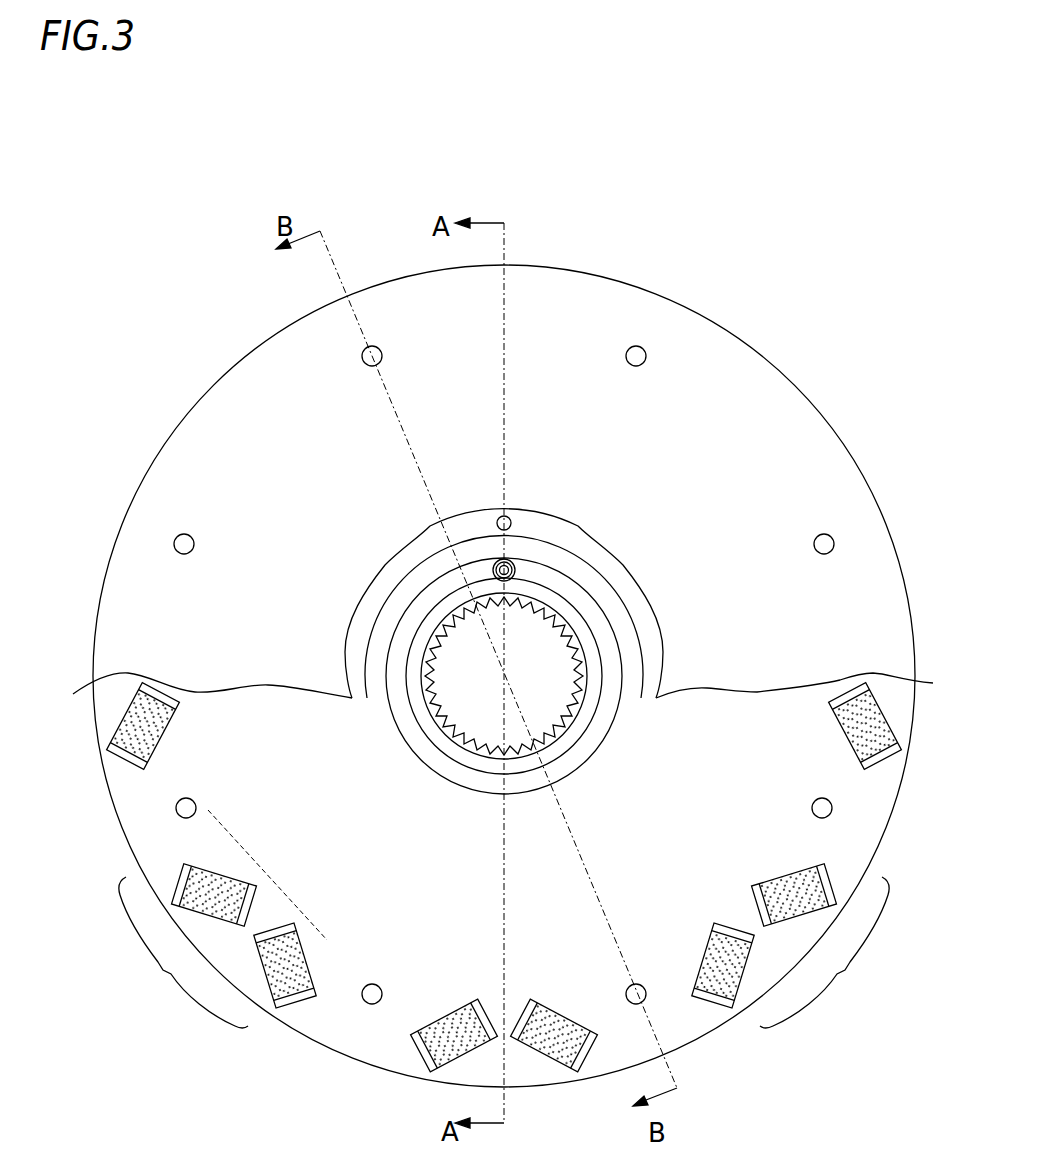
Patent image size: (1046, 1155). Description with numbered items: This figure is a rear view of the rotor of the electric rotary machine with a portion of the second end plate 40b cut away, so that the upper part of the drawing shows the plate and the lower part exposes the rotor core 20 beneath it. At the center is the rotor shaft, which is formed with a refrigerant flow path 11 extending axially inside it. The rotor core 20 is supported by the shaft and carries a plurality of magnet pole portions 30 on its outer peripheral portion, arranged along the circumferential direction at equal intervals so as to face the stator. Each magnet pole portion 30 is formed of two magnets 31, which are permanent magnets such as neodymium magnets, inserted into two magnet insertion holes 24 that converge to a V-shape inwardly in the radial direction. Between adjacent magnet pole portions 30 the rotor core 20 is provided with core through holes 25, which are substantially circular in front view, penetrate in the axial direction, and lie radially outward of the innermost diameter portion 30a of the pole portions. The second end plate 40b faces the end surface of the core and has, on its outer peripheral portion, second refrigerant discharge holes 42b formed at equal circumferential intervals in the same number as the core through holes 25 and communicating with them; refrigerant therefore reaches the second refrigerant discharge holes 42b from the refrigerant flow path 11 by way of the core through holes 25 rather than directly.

The refrigerant flow path 11 is at (542, 698).
The rotor core 20 is at (918, 777).
The magnet insertion hole 24 is at (177, 872).
The core through hole 25 is at (193, 798).
The magnet pole portion 30 is at (504, 952).
The innermost diameter portion 30a is at (258, 866).
The magnet 31 is at (222, 862).
The second end plate 40b is at (265, 383).
The second refrigerant discharge hole 42b is at (365, 350).